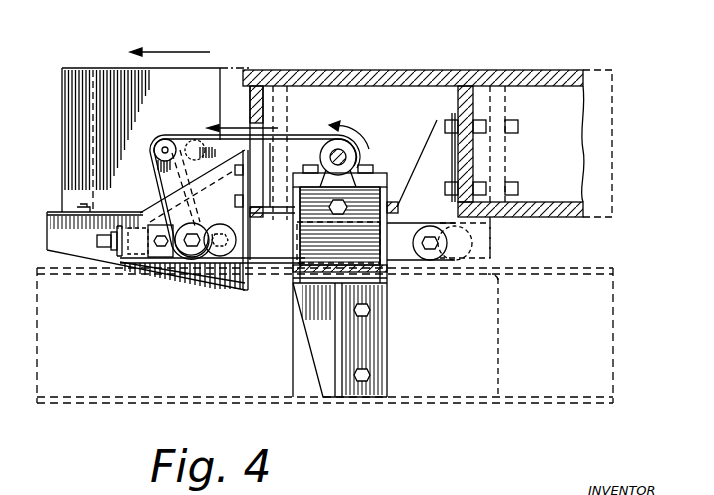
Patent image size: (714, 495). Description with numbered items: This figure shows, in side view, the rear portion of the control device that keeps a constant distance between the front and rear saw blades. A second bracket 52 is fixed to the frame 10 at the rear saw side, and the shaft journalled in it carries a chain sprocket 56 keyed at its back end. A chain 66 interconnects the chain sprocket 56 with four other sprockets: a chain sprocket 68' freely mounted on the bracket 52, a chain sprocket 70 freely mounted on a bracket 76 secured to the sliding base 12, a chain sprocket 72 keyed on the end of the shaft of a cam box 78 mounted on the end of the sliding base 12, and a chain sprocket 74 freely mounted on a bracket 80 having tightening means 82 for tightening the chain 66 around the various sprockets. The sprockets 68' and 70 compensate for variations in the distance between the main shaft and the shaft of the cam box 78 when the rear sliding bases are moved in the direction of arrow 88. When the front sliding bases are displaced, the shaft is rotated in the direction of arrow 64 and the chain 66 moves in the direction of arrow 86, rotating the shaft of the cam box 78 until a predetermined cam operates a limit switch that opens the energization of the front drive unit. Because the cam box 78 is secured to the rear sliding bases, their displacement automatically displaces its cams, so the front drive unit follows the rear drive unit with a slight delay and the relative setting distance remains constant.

The frame 10 is at (556, 377).
The sliding base 12 is at (540, 80).
The second bracket 52 is at (373, 207).
The chain sprocket 56 is at (329, 157).
The arrow 64 is at (349, 136).
The chain 66 is at (298, 136).
The chain sprocket 68' is at (338, 226).
The chain sprocket 70 is at (427, 256).
The chain sprocket 72 is at (162, 140).
The chain sprocket 74 is at (190, 258).
The bracket 76 is at (437, 122).
The cam box 78 is at (98, 80).
The bracket 80 is at (143, 210).
The tightening means 82 is at (103, 250).
The arrow 86 is at (236, 120).
The arrow 88 is at (190, 32).